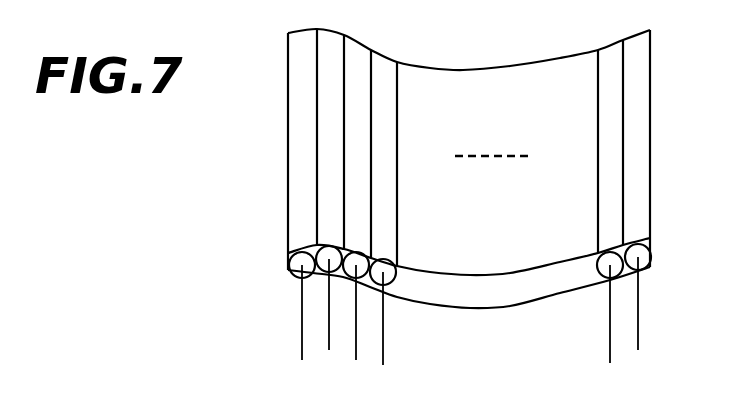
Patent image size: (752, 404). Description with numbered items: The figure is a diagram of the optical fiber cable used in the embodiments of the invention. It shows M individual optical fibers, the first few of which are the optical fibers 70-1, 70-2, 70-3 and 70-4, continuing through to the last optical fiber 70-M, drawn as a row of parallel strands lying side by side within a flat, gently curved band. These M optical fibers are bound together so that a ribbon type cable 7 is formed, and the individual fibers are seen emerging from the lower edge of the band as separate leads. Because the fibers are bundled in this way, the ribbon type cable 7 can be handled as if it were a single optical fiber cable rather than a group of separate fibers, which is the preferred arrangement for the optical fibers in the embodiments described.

The ribbon type cable 7 is at (650, 112).
The optical fiber 70-1 is at (293, 51).
The optical fiber 70-2 is at (337, 34).
The optical fiber 70-3 is at (353, 33).
The optical fiber 70-4 is at (388, 62).
The optical fiber 70-M is at (637, 42).